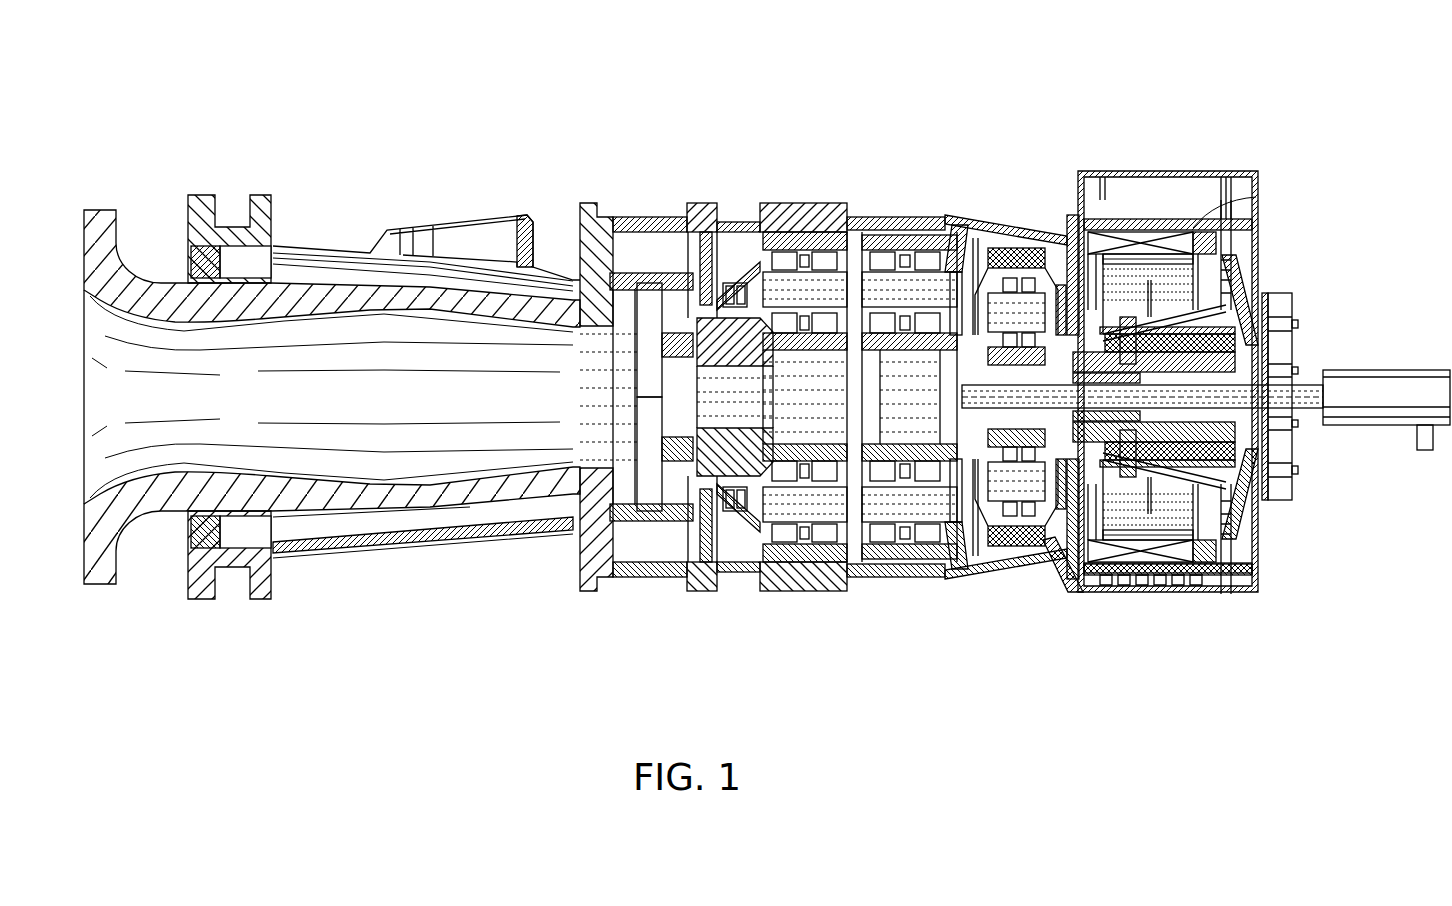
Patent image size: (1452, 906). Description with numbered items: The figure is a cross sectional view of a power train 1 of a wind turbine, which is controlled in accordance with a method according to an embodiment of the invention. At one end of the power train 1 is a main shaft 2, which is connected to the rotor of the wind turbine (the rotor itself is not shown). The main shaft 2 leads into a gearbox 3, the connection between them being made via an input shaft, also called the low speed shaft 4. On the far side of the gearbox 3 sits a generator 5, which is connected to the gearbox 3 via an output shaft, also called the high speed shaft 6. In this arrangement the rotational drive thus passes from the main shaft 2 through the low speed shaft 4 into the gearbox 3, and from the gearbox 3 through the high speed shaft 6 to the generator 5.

The power train 1 is at (1288, 92).
The main shaft 2 is at (99, 205).
The gearbox 3 is at (800, 201).
The low speed shaft 4 is at (718, 307).
The generator 5 is at (1178, 165).
The high speed shaft 6 is at (1030, 410).